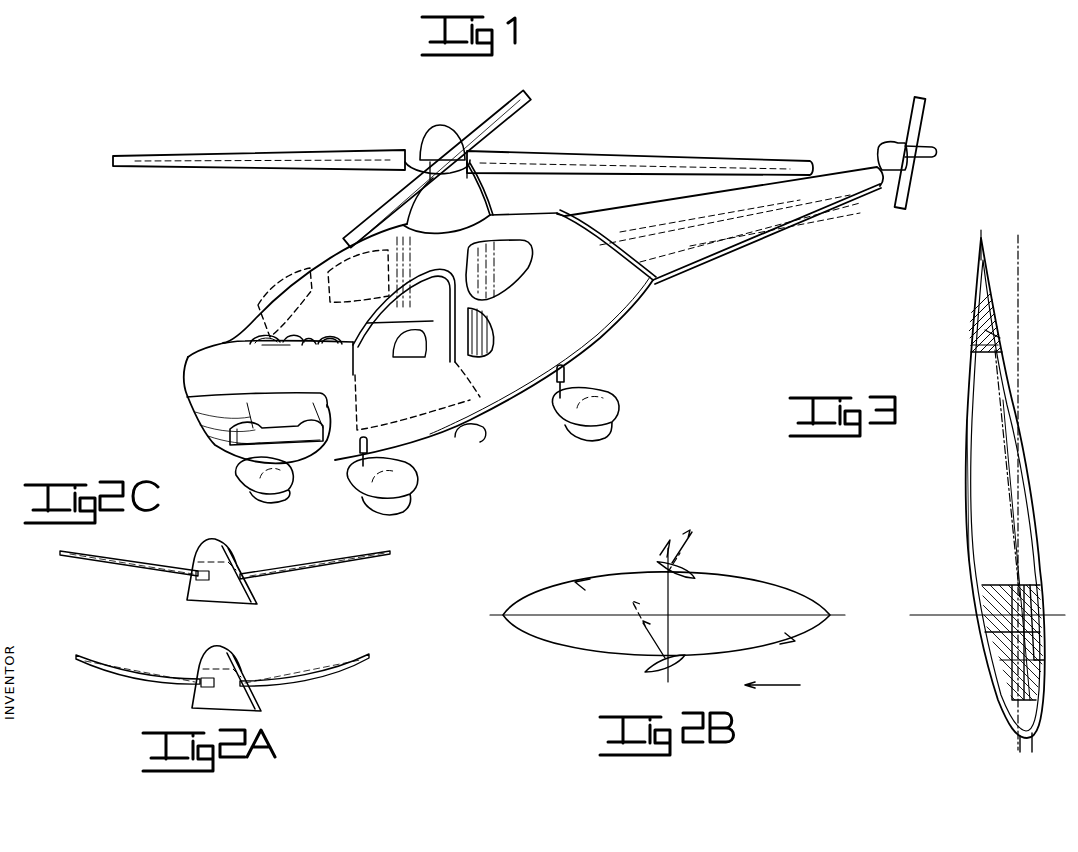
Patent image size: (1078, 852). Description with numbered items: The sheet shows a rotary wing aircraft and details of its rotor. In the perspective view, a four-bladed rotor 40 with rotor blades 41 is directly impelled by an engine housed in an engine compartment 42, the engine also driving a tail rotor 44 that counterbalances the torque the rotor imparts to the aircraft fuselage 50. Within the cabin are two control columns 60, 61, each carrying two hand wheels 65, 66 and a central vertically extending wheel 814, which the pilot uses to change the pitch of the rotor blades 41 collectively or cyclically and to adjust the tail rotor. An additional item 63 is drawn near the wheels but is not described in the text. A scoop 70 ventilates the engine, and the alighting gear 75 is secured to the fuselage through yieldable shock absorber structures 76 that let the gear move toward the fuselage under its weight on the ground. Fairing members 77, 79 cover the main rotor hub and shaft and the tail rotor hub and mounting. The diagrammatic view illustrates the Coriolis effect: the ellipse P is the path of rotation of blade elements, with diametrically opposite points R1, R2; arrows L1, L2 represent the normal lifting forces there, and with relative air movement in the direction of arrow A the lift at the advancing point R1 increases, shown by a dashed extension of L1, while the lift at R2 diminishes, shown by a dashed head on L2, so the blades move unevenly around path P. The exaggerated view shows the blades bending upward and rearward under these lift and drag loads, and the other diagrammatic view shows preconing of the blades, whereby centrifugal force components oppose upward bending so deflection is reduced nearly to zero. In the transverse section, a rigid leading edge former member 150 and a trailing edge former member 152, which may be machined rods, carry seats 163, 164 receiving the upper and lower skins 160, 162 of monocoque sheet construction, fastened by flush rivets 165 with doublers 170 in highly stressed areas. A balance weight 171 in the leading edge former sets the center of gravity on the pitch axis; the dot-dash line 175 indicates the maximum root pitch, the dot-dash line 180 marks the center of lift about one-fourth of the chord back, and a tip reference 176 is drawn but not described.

In FIG. 1, the four-bladed rotor 40 is at (538, 155).
In FIG. 1, the rotor blades 41 is at (307, 157).
In FIG. 2C, the rotor blades 41 is at (208, 565).
In FIG. 2A, the rotor blades 41 is at (210, 672).
In FIG. 1, the engine compartment 42 is at (490, 268).
In FIG. 1, the tail rotor 44 is at (912, 168).
In FIG. 1, the aircraft fuselage 50 is at (622, 325).
In FIG. 1, the control column 60 is at (328, 442).
In FIG. 1, the control column 61 is at (207, 420).
In FIG. 1, the instrument 63 is at (258, 337).
In FIG. 1, the hand wheel 65 is at (304, 343).
In FIG. 1, the hand wheel 66 is at (281, 336).
In FIG. 1, the scoop 70 is at (497, 339).
In FIG. 1, the alighting gear 75 is at (398, 505).
In FIG. 1, the shock absorber structures 76 is at (369, 444).
In FIG. 1, the fairing member 77 is at (480, 198).
In FIG. 2C, the fairing member 77 is at (250, 588).
In FIG. 2A, the fairing member 77 is at (254, 700).
In FIG. 1, the fairing member 79 is at (891, 147).
In FIG. 1, the central vertically extending wheel 814 is at (272, 348).
In FIG. 3, the leading edge former member 150 is at (1015, 708).
In FIG. 3, the trailing edge former member 152 is at (975, 277).
In FIG. 3, the upper blade surface skin 160 is at (968, 467).
In FIG. 3, the lower blade surface skin 162 is at (1017, 455).
In FIG. 3, the seat 163 is at (985, 585).
In FIG. 3, the seat 164 is at (972, 357).
In FIG. 3, the rivets 165 is at (972, 346).
In FIG. 3, the doublers 170 is at (1036, 582).
In FIG. 3, the balance weight 171 is at (1008, 675).
In FIG. 3, the maximum pitch line 175 is at (1020, 247).
In FIG. 3, the tip 176 is at (979, 237).
In FIG. 3, the center of lift line 180 is at (935, 616).
In FIG. 2B, the path of rotation P is at (782, 598).
In FIG. 2B, the rotation cycle point R1 is at (663, 668).
In FIG. 2B, the rotation cycle point R2 is at (666, 566).
In FIG. 2B, the lifting force arrow L1 is at (670, 645).
In FIG. 2B, the lifting force arrow L2 is at (685, 563).
In FIG. 2B, the relative air movement arrow A is at (778, 685).